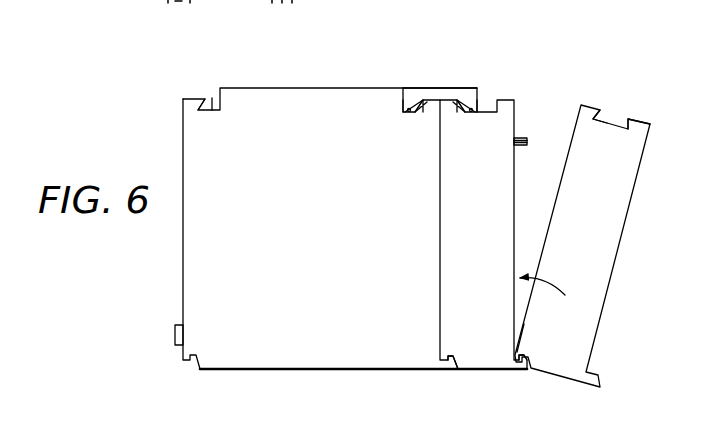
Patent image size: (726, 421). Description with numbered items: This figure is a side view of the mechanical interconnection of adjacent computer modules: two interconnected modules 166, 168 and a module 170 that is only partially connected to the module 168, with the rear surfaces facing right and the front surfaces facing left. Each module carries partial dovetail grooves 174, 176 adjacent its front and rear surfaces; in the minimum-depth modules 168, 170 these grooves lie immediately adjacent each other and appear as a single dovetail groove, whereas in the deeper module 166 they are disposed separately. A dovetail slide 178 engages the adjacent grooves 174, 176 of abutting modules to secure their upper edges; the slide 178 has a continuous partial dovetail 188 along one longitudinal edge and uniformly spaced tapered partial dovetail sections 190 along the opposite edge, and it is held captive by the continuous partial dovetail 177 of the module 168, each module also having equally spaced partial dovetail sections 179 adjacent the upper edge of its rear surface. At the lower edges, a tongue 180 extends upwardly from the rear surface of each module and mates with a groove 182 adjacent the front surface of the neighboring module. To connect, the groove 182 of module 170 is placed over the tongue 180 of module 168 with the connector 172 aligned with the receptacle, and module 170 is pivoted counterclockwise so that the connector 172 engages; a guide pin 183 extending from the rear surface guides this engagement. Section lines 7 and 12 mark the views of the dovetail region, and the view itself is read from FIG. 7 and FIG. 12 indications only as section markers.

The computer module 166 is at (324, 230).
The computer module 168 is at (494, 230).
The computer module 170 is at (602, 230).
The connector 172 is at (176, 334).
The partial dovetail groove 174 is at (410, 110).
The partial dovetail groove 176 is at (210, 98).
The continuous partial dovetail 177 is at (455, 100).
The dovetail slide 178 is at (453, 86).
The partial dovetail sections 179 is at (410, 100).
The tongue 180 is at (522, 370).
The groove 182 is at (512, 358).
The guide pin 183 is at (528, 138).
The continuous partial dovetail 188 is at (480, 96).
The tapered partial dovetail sections 190 is at (404, 96).
The section line 12- 12 is at (408, 143).
The section line 7- 7 is at (393, 98).